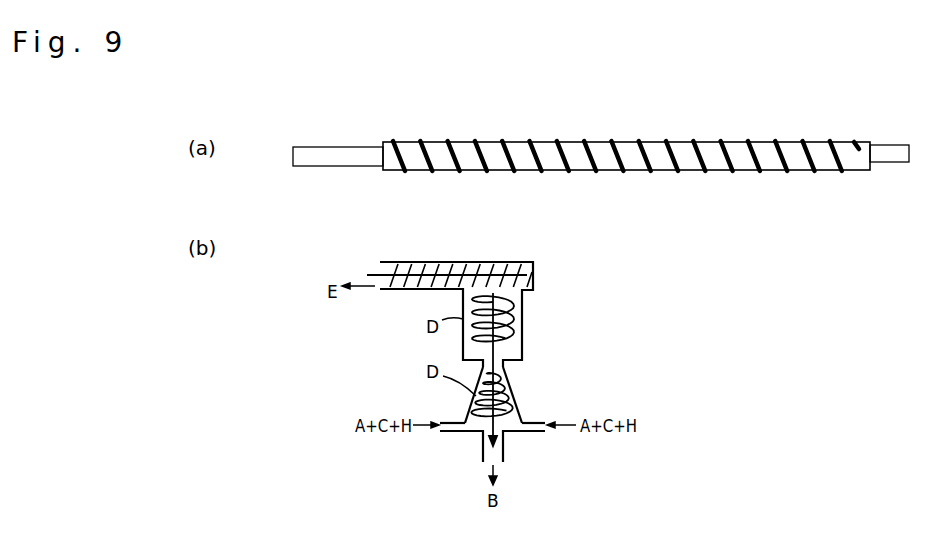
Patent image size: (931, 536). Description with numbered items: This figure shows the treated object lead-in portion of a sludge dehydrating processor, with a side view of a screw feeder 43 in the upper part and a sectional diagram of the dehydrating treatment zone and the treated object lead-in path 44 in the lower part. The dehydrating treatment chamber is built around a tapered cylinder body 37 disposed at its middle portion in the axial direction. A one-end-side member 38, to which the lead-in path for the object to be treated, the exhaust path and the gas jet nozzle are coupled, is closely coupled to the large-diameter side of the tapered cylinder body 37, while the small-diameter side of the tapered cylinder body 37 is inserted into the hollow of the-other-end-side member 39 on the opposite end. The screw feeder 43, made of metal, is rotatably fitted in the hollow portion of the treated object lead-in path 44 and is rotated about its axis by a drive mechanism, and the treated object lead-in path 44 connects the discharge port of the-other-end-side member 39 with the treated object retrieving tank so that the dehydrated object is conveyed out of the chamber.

The screw feeder 43 is at (862, 171).
The treated object lead-in path 44 is at (533, 266).
The the-other-end-side member 39 is at (522, 330).
The tapered cylinder body 37 is at (510, 392).
The one-end-side member 38 is at (510, 434).